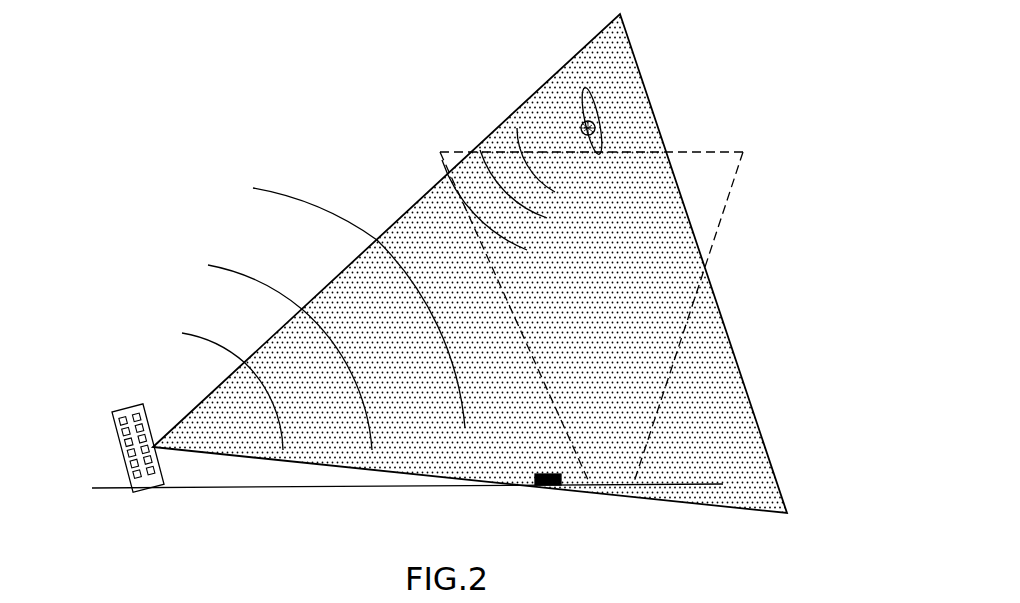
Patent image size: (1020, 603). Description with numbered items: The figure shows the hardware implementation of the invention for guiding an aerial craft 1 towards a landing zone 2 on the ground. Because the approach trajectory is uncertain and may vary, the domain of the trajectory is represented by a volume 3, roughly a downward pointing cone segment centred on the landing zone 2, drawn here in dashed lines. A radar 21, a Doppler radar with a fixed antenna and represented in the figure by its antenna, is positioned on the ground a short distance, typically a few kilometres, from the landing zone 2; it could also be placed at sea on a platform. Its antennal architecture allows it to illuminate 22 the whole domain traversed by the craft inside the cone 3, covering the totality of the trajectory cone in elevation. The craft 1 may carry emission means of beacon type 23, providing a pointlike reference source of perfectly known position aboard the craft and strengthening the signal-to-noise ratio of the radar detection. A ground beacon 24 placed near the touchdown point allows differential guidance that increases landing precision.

The aerial craft 1 is at (604, 121).
The landing zone 2 is at (613, 486).
The volume 3 is at (716, 252).
The radar 21 is at (138, 403).
The illumination 22 is at (417, 232).
The emission means of beacon type 23 is at (578, 128).
The ground beacon 24 is at (535, 480).